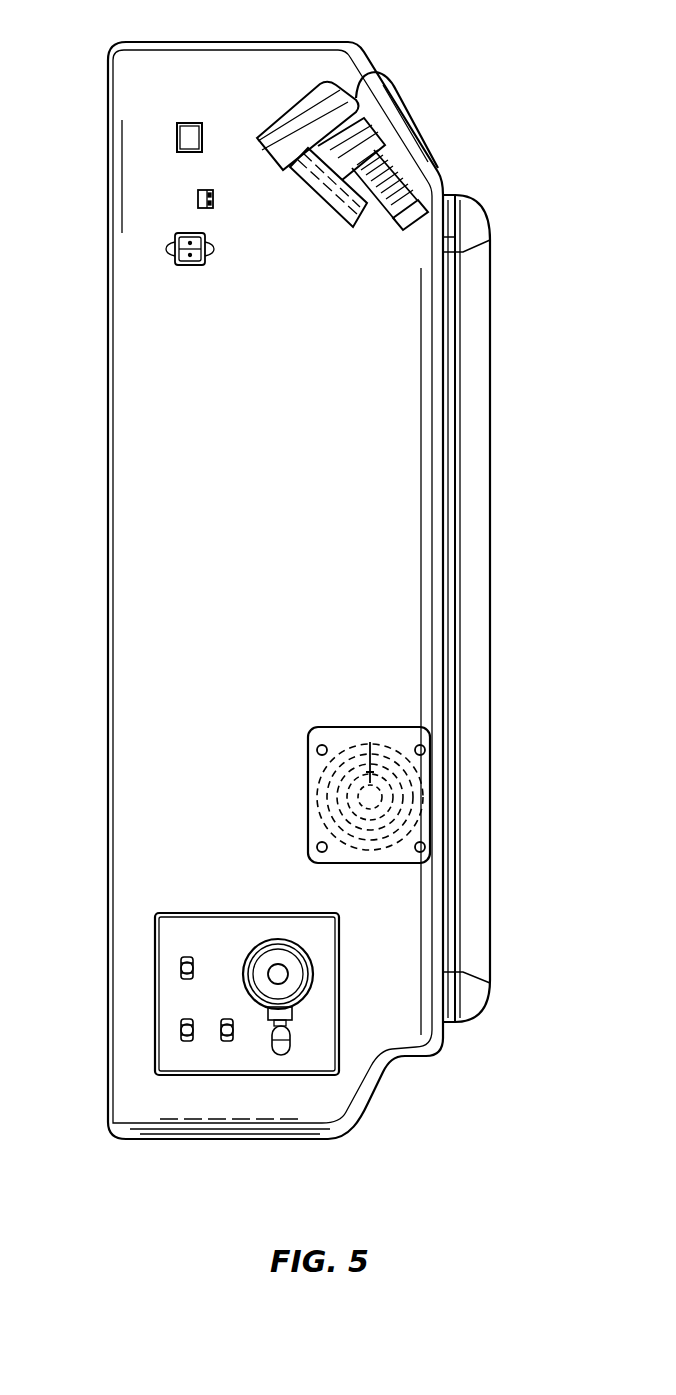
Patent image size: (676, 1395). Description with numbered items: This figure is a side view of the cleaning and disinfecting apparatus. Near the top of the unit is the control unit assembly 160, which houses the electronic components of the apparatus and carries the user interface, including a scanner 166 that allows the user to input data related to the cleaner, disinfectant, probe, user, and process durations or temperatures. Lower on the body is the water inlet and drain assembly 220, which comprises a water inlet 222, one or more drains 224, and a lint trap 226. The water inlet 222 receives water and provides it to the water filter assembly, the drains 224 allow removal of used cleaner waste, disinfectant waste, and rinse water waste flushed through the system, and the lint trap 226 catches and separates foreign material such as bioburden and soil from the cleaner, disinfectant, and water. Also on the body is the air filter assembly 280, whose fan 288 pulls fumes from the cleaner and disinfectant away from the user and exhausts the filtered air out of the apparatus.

The control unit assembly 160 is at (407, 110).
The scanner 166 is at (340, 97).
The water inlet and drain assembly 220 is at (155, 982).
The water inlet 222 is at (178, 957).
The drains 224 is at (178, 1037).
The lint trap 226 is at (297, 1000).
The air filter assembly 280 is at (385, 733).
The fan 288 is at (375, 797).